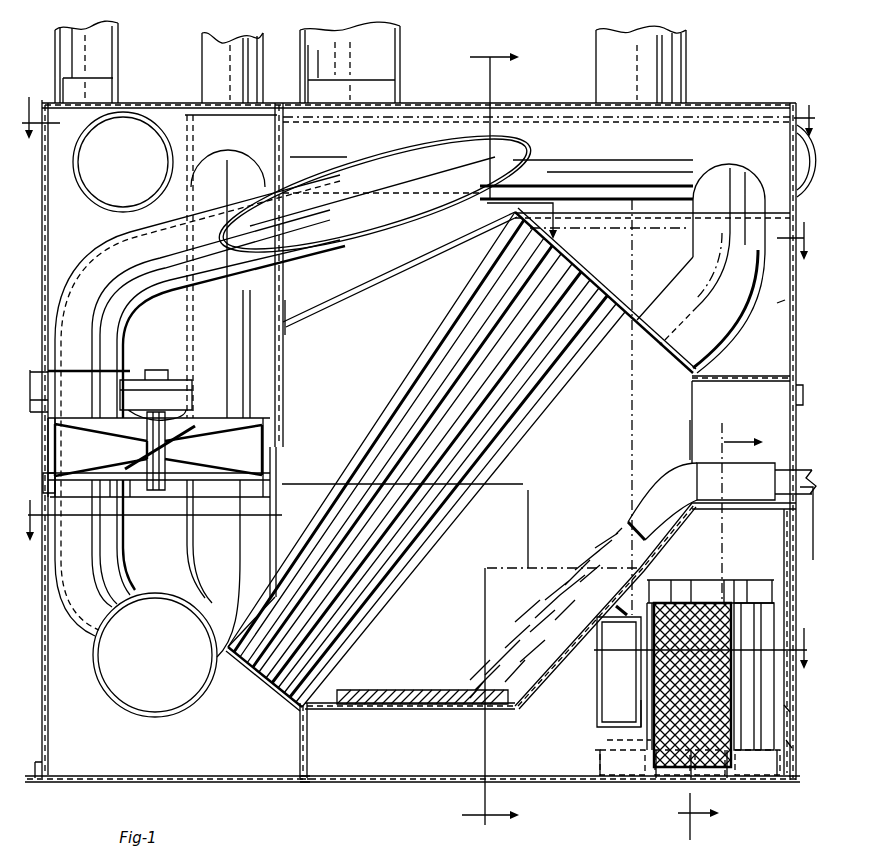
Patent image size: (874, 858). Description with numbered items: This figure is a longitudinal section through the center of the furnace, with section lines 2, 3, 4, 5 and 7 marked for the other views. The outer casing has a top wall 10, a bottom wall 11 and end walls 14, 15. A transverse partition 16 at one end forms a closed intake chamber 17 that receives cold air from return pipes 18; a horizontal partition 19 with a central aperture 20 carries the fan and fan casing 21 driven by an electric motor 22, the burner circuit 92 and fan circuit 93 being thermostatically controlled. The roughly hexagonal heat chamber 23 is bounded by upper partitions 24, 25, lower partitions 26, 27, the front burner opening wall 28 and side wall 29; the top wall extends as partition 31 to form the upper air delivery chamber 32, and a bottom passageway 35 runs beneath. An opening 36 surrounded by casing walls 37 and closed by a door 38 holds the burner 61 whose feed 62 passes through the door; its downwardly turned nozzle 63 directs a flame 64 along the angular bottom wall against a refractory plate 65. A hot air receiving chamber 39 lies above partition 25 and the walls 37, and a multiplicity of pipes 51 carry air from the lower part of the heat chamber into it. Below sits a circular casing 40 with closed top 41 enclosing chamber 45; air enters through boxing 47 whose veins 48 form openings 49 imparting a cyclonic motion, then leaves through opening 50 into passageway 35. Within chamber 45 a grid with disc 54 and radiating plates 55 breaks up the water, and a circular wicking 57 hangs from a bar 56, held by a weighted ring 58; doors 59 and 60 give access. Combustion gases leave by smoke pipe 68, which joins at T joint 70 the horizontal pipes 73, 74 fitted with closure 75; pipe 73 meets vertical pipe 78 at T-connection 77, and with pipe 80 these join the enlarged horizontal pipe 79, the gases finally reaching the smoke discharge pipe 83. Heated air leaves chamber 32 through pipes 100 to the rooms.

The top wall 10 is at (508, 106).
The bottom wall 11 is at (407, 781).
The end wall 14 is at (48, 703).
The end wall 15 is at (791, 327).
The transverse partition 16 is at (284, 394).
The intake chamber 17 is at (97, 770).
The pipes 18 is at (70, 42).
The transverse horizontal partition 19 is at (55, 482).
The central aperture 20 is at (120, 480).
The fan and fan casing 21 is at (208, 450).
The electric motor 22 is at (173, 390).
The heat chamber 23 is at (461, 512).
The partition 24 is at (343, 288).
The partition 25 is at (661, 336).
The partition 26 is at (641, 706).
The partition 27 is at (415, 709).
The partition 28 is at (691, 431).
The partition 29 is at (315, 337).
The partition 31 is at (680, 225).
The upper air delivery chamber 32 is at (413, 247).
The bottom passageway 35 is at (357, 762).
The opening 36 is at (707, 403).
The casing walls 37 is at (751, 378).
The door 38 is at (798, 393).
The hot air receiving chamber 39 is at (777, 303).
The circular casing 40 is at (790, 531).
The closed top 41 is at (643, 570).
The chamber 45 is at (641, 708).
The boxing 47 is at (657, 580).
The veins 48 is at (750, 582).
The longitudinal openings 49 is at (752, 640).
The opening 50 is at (611, 686).
The pipes 51 is at (398, 394).
The flat disc bottom 54 is at (607, 757).
The radiating vertical plates 55 is at (629, 775).
The bar 56 is at (762, 583).
The circular wicking 57 is at (655, 669).
The weighted ring 58 is at (657, 780).
The door 59 is at (794, 745).
The door 60 is at (787, 713).
The burner 61 is at (707, 473).
The feed of air and fuel 62 is at (807, 470).
The nozzle 63 is at (631, 511).
The flame 64 is at (467, 650).
The plate 65 is at (370, 692).
The smoke pipe 68 is at (767, 267).
The T joint 70 is at (727, 180).
The smoke pipe 73 is at (677, 140).
The smoke pipe 74 is at (413, 152).
The removable closure 75 is at (804, 180).
The T-connection 77 is at (217, 163).
The vertical pipe 78 is at (187, 324).
The enlarged horizontal pipe 79 is at (157, 717).
The vertical pipe 80 is at (80, 295).
The smoke discharge pipe 83 is at (130, 122).
The burner circuit 92 is at (812, 545).
The fan circuit 93 is at (30, 407).
The pipes 100 is at (392, 55).
The section line 2- 2 is at (418, 109).
The section line 3- 3 is at (418, 584).
The section line 4- 4 is at (649, 231).
The section line 5- 5 is at (497, 436).
The section line 7- 7 is at (728, 631).